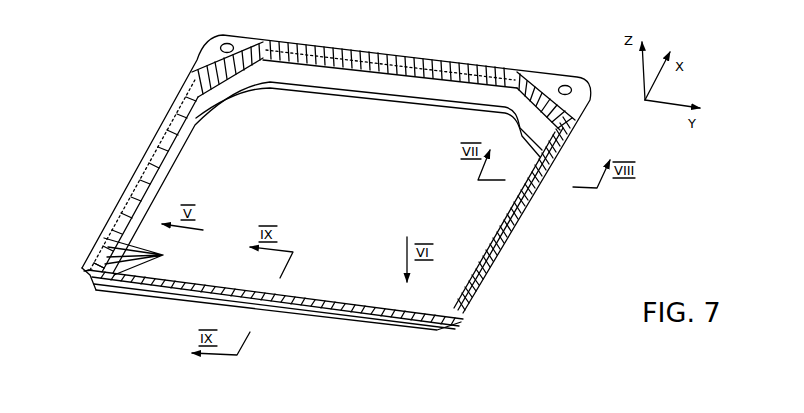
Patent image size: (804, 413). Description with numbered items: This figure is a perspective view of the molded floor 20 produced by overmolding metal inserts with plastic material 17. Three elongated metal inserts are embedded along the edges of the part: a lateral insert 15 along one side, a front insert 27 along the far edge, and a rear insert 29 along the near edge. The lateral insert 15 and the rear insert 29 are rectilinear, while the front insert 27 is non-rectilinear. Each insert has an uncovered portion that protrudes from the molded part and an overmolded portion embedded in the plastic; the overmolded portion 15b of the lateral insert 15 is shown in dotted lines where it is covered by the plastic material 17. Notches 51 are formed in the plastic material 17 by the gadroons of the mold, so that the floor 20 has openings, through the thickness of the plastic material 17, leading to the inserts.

The lateral insert 15 is at (150, 127).
The overmolded portion 15b is at (98, 241).
The plastic material 17 is at (97, 276).
The floor 20 is at (332, 328).
The front insert 27 is at (448, 62).
The rear insert 29 is at (196, 297).
The notches 51 is at (163, 255).